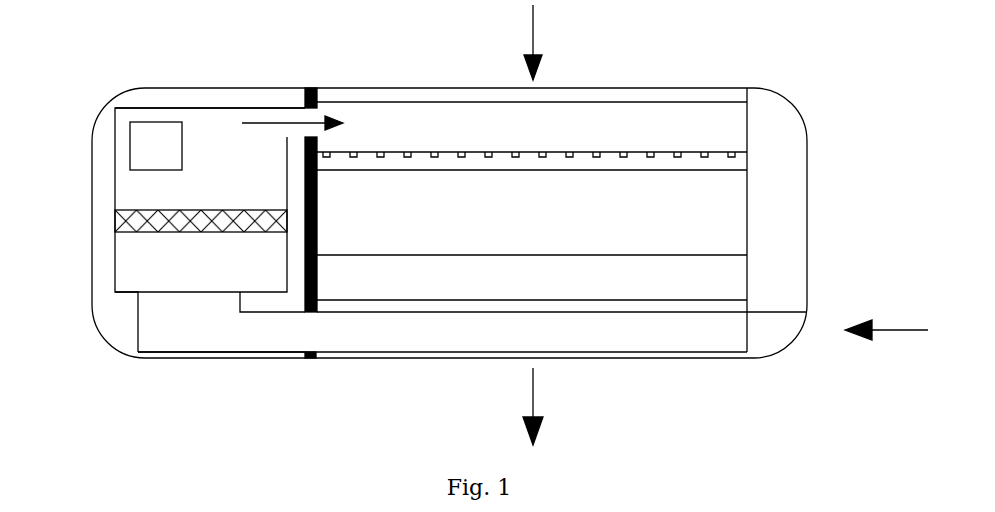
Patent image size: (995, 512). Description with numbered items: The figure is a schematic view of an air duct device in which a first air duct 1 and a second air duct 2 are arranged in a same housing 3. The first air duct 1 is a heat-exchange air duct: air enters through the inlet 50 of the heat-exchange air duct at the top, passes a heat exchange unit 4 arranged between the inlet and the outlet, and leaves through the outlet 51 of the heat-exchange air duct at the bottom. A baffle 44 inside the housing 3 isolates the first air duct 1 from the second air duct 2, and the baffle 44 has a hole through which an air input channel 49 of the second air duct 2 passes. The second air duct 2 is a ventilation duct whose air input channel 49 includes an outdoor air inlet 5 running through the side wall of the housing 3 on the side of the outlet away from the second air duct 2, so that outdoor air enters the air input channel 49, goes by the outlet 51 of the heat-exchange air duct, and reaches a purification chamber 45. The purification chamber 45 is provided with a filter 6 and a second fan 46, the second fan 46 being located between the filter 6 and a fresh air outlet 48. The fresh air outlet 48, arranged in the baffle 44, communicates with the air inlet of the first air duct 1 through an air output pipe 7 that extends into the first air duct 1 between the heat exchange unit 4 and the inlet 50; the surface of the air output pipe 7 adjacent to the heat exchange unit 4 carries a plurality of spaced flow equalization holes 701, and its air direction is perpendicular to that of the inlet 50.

The first air duct 1 is at (790, 238).
The second air duct 2 is at (108, 302).
The housing 3 is at (390, 358).
The heat exchange unit 4 is at (445, 210).
The outdoor air inlet 5 is at (785, 330).
The filter 6 is at (172, 210).
The air output pipe 7 is at (427, 110).
The flow equalization holes 701 is at (702, 152).
The baffle 44 is at (307, 312).
The purification chamber 45 is at (205, 122).
The second fan 46 is at (153, 143).
The fresh air outlet 48 is at (297, 117).
The air input channel 49 is at (207, 328).
The inlet of the heat-exchange air duct 50 is at (600, 98).
The outlet of the heat-exchange air duct 51 is at (580, 353).